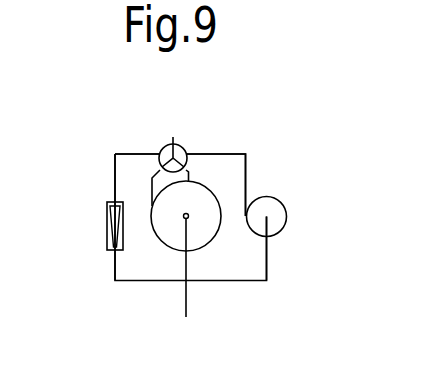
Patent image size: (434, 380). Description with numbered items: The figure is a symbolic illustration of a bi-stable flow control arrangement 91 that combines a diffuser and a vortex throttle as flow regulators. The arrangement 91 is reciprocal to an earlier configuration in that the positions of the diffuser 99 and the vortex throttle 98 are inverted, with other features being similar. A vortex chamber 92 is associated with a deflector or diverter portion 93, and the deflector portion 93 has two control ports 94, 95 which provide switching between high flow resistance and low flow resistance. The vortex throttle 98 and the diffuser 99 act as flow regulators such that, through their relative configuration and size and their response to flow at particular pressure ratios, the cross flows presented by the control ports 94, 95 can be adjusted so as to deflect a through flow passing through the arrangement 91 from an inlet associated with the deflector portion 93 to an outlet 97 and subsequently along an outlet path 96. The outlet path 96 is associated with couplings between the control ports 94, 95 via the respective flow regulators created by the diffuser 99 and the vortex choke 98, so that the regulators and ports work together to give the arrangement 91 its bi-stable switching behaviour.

The arrangement 91 is at (323, 165).
The vortex chamber 92 is at (198, 237).
The deflector portion 93 is at (178, 148).
The control port 94 is at (132, 154).
The control port 95 is at (220, 153).
The outlet path 96 is at (187, 309).
The outlet 97 is at (188, 214).
The vortex throttle 98 is at (266, 216).
The diffuser 99 is at (106, 215).